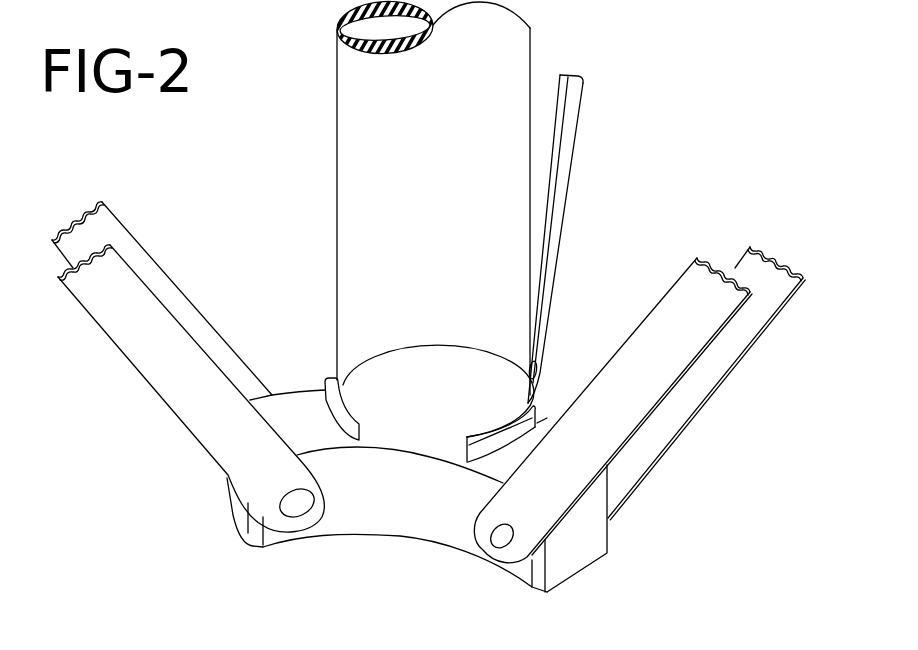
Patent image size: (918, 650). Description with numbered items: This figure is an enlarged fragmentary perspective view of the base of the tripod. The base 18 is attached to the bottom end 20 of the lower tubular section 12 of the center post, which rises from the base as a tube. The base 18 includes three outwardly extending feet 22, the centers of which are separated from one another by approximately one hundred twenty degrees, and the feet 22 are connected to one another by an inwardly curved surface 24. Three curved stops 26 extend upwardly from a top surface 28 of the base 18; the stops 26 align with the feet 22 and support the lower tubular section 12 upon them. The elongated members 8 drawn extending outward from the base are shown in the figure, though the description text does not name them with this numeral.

The support arm 8 is at (572, 158).
The lower tubular section 12 is at (358, 94).
The base 18 is at (398, 464).
The bottom end 20 is at (380, 434).
The feet 22 is at (243, 518).
The inwardly curved surface 24 is at (413, 518).
The curved stops 26 is at (335, 392).
The top surface 28 is at (296, 408).